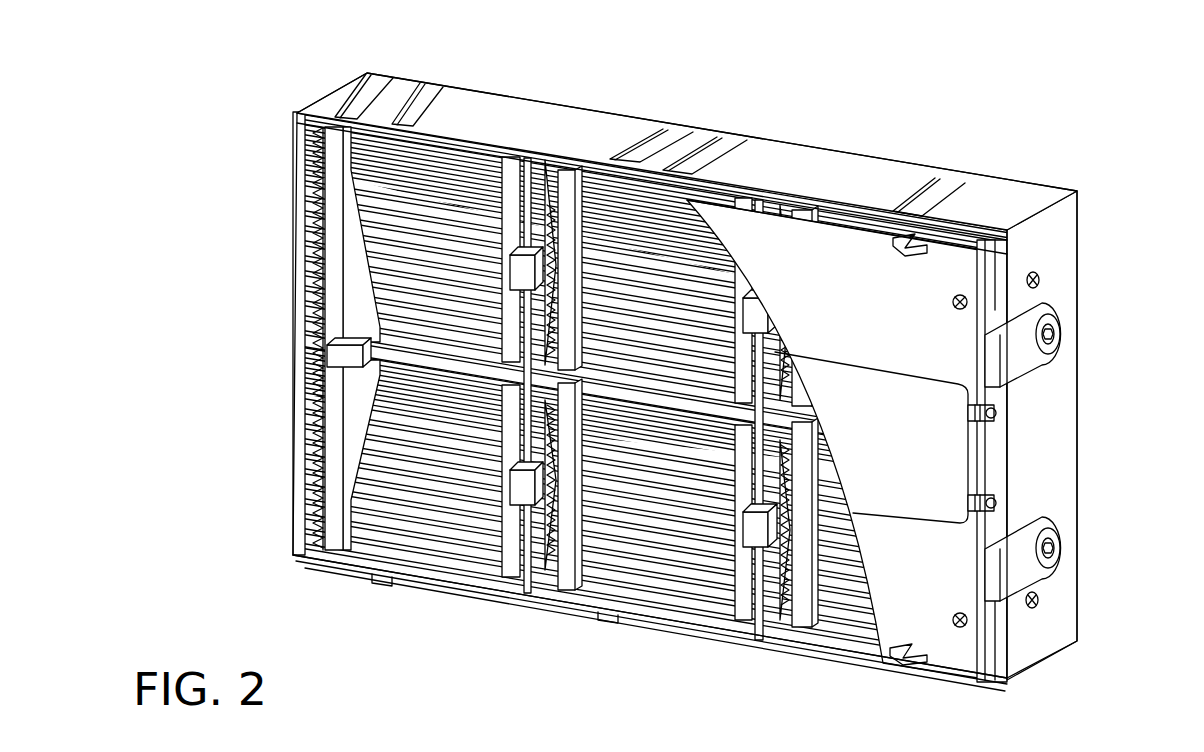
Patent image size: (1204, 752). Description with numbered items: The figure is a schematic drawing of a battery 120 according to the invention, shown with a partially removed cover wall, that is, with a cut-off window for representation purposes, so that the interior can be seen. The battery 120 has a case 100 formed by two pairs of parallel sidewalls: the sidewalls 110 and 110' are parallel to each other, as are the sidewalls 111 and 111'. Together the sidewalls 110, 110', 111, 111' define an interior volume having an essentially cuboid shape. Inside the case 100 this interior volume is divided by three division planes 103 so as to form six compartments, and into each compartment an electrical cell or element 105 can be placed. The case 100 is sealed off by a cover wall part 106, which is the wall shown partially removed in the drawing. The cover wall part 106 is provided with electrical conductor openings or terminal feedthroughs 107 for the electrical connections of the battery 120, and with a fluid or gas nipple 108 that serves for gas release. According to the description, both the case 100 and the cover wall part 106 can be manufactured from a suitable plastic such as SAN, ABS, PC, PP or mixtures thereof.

The case 100 is at (1049, 236).
The division planes 103 is at (542, 182).
The electrical cell or element 105 is at (649, 272).
The cover wall part 106 is at (846, 338).
The terminal feedthroughs 107 is at (1062, 548).
The gas nipple 108 is at (992, 410).
The sidewall 110 is at (1027, 436).
The sidewall 110' is at (253, 333).
The sidewall 111 is at (652, 183).
The sidewall 111' is at (650, 630).
The battery 120 is at (798, 116).